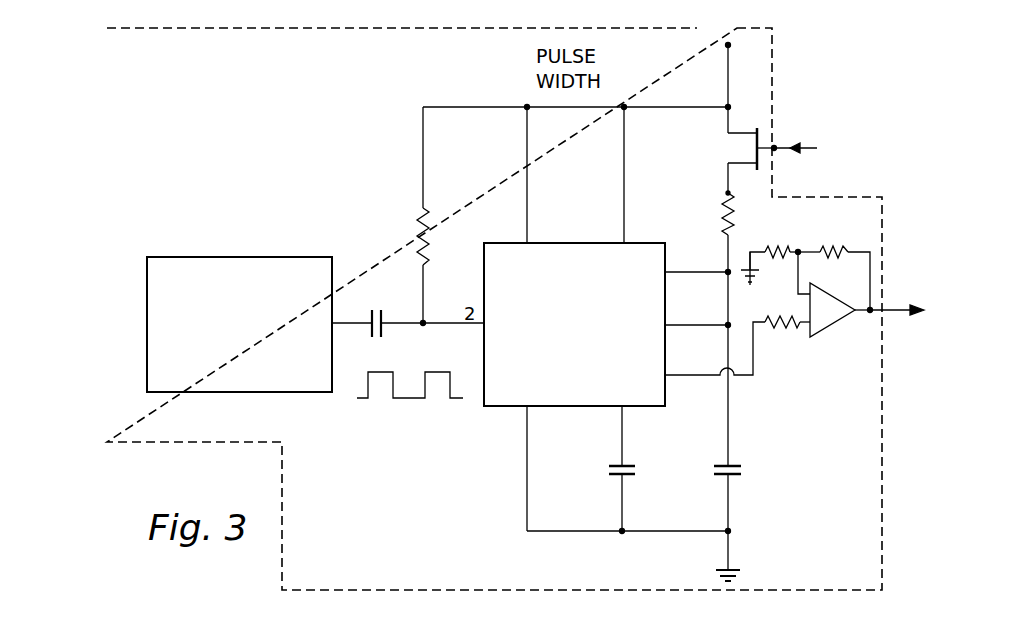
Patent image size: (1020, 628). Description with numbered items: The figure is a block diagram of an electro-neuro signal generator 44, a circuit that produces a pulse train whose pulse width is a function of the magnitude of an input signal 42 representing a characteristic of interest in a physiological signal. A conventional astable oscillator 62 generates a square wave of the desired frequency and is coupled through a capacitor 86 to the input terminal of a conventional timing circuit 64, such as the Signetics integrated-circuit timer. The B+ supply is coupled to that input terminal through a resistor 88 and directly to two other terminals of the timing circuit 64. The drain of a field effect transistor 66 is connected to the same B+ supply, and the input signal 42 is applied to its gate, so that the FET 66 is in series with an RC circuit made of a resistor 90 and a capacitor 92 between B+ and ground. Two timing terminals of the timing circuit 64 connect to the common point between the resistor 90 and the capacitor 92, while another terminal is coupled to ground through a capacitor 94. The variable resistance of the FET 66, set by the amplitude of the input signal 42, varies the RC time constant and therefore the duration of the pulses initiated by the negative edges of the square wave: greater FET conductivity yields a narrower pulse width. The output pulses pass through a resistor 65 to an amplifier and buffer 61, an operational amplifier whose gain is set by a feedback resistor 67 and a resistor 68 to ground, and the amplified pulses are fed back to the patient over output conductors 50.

The electro-neuro signal generator 44 is at (106, 116).
The input signal 42 is at (790, 146).
The field effect transistor 66 is at (738, 133).
The resistor 90 is at (715, 208).
The astable oscillator 62 is at (235, 262).
The resistor 88 is at (416, 240).
The capacitor 86 is at (372, 337).
The timing circuit 64 is at (578, 243).
The resistor 68 is at (776, 249).
The feedback resistor 67 is at (837, 249).
The amplifier and buffer 61 is at (832, 300).
The resistor 65 is at (784, 328).
The output conductors 50 is at (887, 308).
The capacitor 94 is at (628, 465).
The capacitor 92 is at (716, 465).